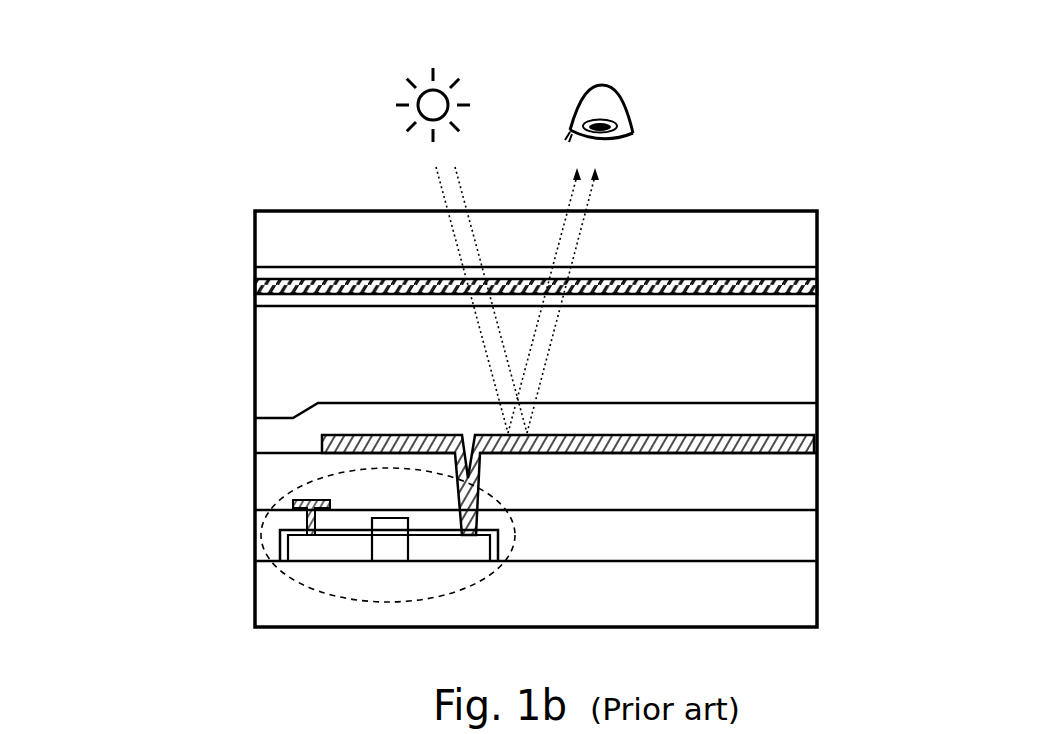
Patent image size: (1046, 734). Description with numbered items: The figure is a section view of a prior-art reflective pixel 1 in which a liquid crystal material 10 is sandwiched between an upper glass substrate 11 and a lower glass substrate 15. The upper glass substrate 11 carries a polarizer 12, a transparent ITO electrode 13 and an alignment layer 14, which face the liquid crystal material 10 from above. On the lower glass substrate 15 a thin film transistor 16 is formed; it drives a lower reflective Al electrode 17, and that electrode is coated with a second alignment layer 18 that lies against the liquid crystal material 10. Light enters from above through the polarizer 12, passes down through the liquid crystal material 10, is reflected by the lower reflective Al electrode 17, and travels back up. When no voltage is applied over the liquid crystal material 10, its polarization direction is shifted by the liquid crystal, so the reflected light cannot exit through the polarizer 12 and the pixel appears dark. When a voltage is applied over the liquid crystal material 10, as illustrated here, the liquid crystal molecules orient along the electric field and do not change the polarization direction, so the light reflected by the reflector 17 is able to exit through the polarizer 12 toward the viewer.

The reflective pixel 1 is at (193, 201).
The liquid crystal material 10 is at (793, 385).
The upper glass substrate 11 is at (805, 238).
The polarizer 12 is at (808, 272).
The transparent ITO electrode 13 is at (815, 290).
The alignment layer 14 is at (805, 300).
The lower glass substrate 15 is at (795, 597).
The thin film transistor 16 is at (262, 542).
The lower reflective Al electrode 17 is at (810, 455).
The second alignment layer 18 is at (797, 420).